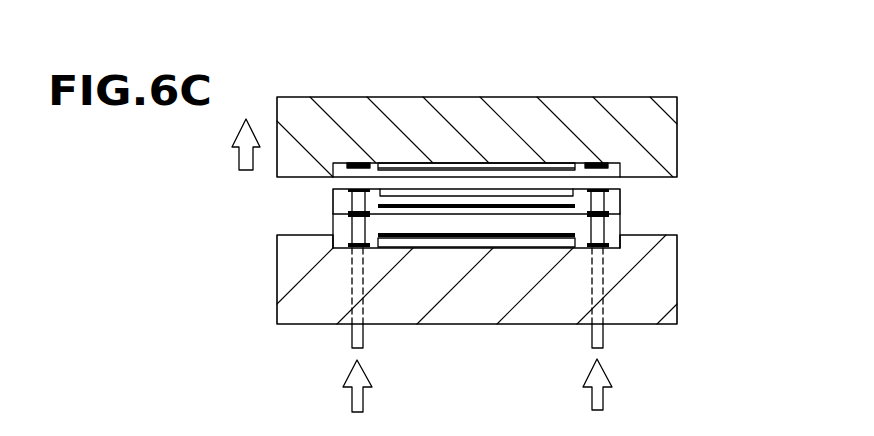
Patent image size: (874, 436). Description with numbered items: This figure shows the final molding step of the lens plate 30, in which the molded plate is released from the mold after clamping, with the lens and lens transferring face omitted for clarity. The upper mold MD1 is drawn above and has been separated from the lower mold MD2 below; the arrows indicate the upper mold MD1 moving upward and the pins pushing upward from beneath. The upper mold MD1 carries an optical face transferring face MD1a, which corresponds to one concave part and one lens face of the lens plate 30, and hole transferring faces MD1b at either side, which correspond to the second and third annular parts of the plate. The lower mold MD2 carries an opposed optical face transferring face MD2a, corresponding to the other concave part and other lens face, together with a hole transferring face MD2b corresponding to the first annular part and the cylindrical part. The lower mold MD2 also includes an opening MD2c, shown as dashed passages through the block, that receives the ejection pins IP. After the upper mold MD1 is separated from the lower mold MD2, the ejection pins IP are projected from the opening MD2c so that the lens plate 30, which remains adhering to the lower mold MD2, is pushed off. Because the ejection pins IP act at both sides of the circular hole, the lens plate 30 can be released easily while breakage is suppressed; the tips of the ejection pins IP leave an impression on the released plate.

The upper mold MD1 is at (678, 96).
The optical face transferring face MD1a is at (457, 185).
The hole transferring faces MD1b is at (351, 162).
The lens plate 30 is at (621, 191).
The ejection pins IP is at (347, 216).
The hole transferring face MD2b is at (347, 244).
The optical face transferring face MD2a is at (500, 247).
The lower mold MD2 is at (678, 324).
The opening MD2c is at (354, 283).